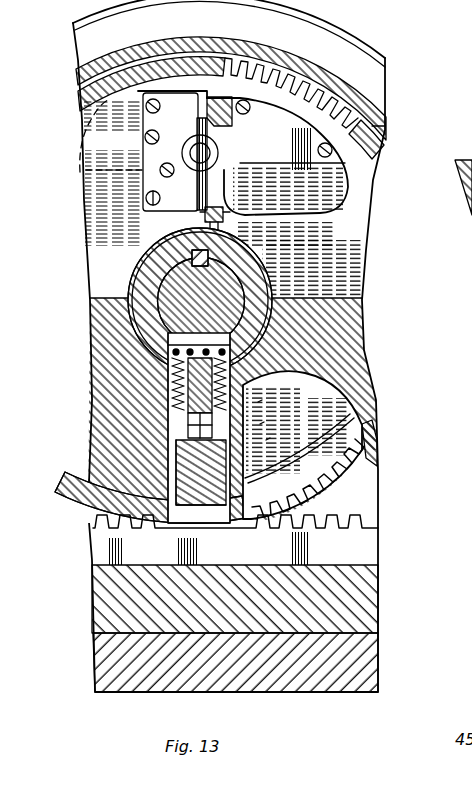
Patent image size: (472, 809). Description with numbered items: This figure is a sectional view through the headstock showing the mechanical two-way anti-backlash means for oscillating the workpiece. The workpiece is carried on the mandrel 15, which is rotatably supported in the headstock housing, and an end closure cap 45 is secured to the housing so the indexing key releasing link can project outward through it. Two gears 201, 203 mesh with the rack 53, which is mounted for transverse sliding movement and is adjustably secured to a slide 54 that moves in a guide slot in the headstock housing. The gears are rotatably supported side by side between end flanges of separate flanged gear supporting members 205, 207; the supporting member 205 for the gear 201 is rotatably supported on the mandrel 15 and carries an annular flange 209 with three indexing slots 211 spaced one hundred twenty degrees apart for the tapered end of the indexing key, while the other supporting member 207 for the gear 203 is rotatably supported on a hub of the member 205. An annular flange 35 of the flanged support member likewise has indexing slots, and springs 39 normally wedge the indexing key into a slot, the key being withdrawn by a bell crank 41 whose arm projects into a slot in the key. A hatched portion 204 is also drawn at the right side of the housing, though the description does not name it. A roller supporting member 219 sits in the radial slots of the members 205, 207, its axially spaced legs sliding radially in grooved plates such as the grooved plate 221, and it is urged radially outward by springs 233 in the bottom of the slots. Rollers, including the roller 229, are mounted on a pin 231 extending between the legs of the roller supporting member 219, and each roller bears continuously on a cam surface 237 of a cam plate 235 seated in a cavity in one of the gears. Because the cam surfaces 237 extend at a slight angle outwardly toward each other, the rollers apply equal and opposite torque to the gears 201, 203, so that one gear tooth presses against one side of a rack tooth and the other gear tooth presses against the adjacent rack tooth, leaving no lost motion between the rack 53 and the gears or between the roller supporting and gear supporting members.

The mandrel 15 is at (230, 286).
The annular flange 35 is at (280, 437).
The springs 39 is at (271, 399).
The bell crank 41 is at (273, 421).
The end closure cap 45 is at (390, 128).
The rack 53 is at (378, 522).
The slide 54 is at (378, 595).
The gear 201 is at (219, 84).
The gear 203 is at (378, 92).
The housing flange 204 is at (352, 155).
The flanged gear supporting member 205 is at (362, 317).
The flanged gear supporting member 207 is at (342, 378).
The annular flange 209 is at (132, 80).
The indexing slots 211 is at (299, 453).
The roller supporting member 219 is at (240, 190).
The grooved plate 221 is at (166, 202).
The roller 229 is at (146, 154).
The pin 231 is at (215, 148).
The springs 233 is at (226, 219).
The cam plate 235 is at (318, 102).
The cam surface 237 is at (225, 167).